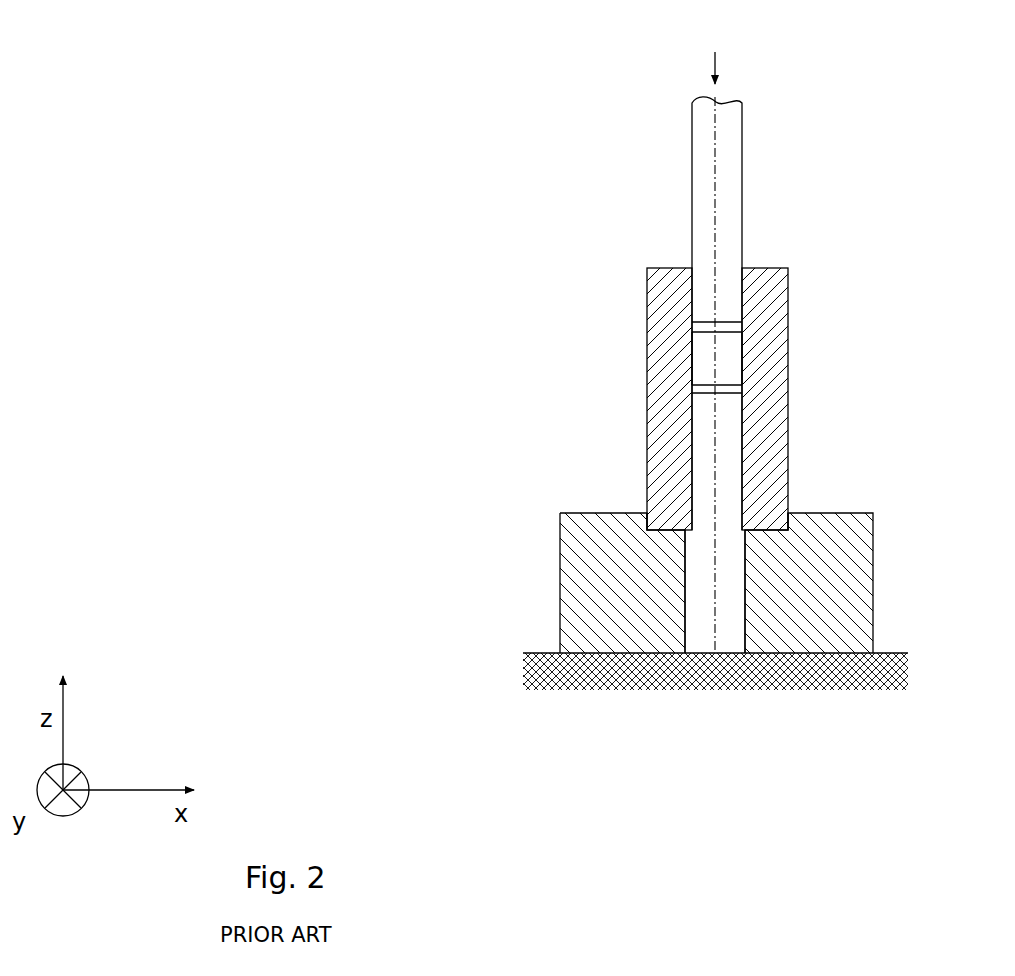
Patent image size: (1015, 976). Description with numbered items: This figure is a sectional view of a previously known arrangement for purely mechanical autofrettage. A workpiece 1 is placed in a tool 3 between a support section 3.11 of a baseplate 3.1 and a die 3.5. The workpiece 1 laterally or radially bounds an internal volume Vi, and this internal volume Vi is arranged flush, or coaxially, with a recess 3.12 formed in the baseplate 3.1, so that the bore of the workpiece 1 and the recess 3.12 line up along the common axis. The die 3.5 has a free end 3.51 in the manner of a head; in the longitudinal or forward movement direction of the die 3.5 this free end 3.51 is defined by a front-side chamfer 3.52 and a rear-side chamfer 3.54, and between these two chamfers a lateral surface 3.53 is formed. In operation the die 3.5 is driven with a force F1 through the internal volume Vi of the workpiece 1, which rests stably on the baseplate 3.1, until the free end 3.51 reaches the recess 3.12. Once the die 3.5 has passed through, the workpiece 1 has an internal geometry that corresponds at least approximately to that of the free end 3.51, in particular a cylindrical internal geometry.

The tool 3 is at (822, 188).
The workpiece 1 is at (776, 407).
The baseplate 3.1 is at (855, 627).
The support section 3.11 is at (795, 500).
The recess 3.12 is at (730, 645).
The die 3.5 is at (730, 164).
The free end 3.51 is at (746, 337).
The front-side chamfer 3.52 is at (738, 394).
The lateral surface 3.53 is at (731, 359).
The rear-side chamfer 3.54 is at (700, 327).
The internal volume Vi is at (700, 456).
The force F1 is at (714, 53).